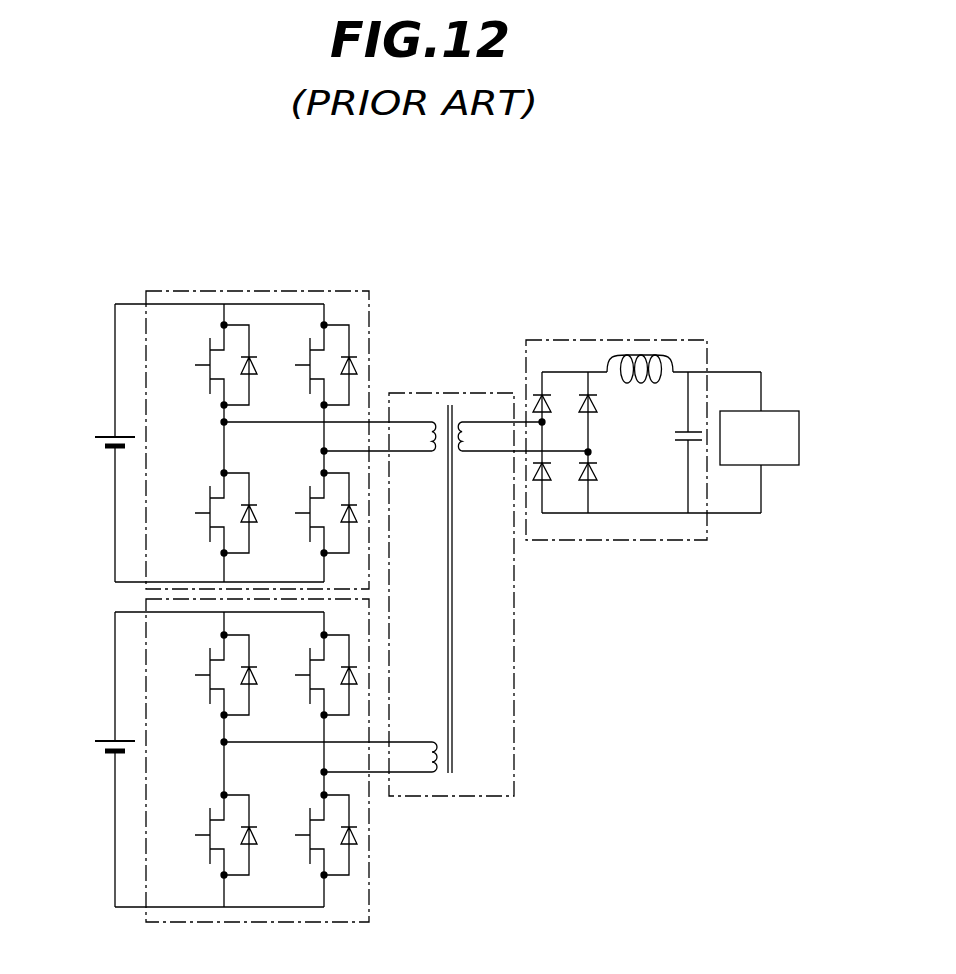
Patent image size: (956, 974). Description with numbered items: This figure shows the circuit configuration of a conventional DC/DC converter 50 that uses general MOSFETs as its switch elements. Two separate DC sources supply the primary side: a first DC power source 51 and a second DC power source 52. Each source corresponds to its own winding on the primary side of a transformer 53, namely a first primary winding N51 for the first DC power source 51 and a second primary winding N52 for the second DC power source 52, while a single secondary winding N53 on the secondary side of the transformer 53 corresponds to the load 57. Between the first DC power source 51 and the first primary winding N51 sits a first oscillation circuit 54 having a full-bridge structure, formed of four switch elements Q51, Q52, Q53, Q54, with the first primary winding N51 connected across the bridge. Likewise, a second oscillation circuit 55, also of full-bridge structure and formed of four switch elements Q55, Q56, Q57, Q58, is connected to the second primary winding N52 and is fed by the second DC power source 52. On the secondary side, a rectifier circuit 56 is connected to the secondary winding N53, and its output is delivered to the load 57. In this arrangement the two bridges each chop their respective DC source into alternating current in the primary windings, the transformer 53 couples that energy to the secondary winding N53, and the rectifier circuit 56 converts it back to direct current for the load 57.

The DC/DC converter 50 is at (474, 242).
The first DC power source 51 is at (103, 430).
The second DC power source 52 is at (103, 736).
The transformer 53 is at (514, 663).
The first oscillation circuit 54 is at (292, 291).
The second oscillation circuit 55 is at (369, 887).
The rectifier circuit 56 is at (602, 340).
The load 57 is at (783, 410).
The switch element Q51 is at (207, 363).
The switch element Q52 is at (307, 363).
The switch element Q53 is at (207, 511).
The switch element Q54 is at (307, 511).
The switch element Q55 is at (207, 673).
The switch element Q56 is at (307, 673).
The switch element Q57 is at (207, 833).
The switch element Q58 is at (307, 833).
The first primary winding N51 is at (331, 457).
The second primary winding N52 is at (331, 739).
The secondary winding N53 is at (523, 458).